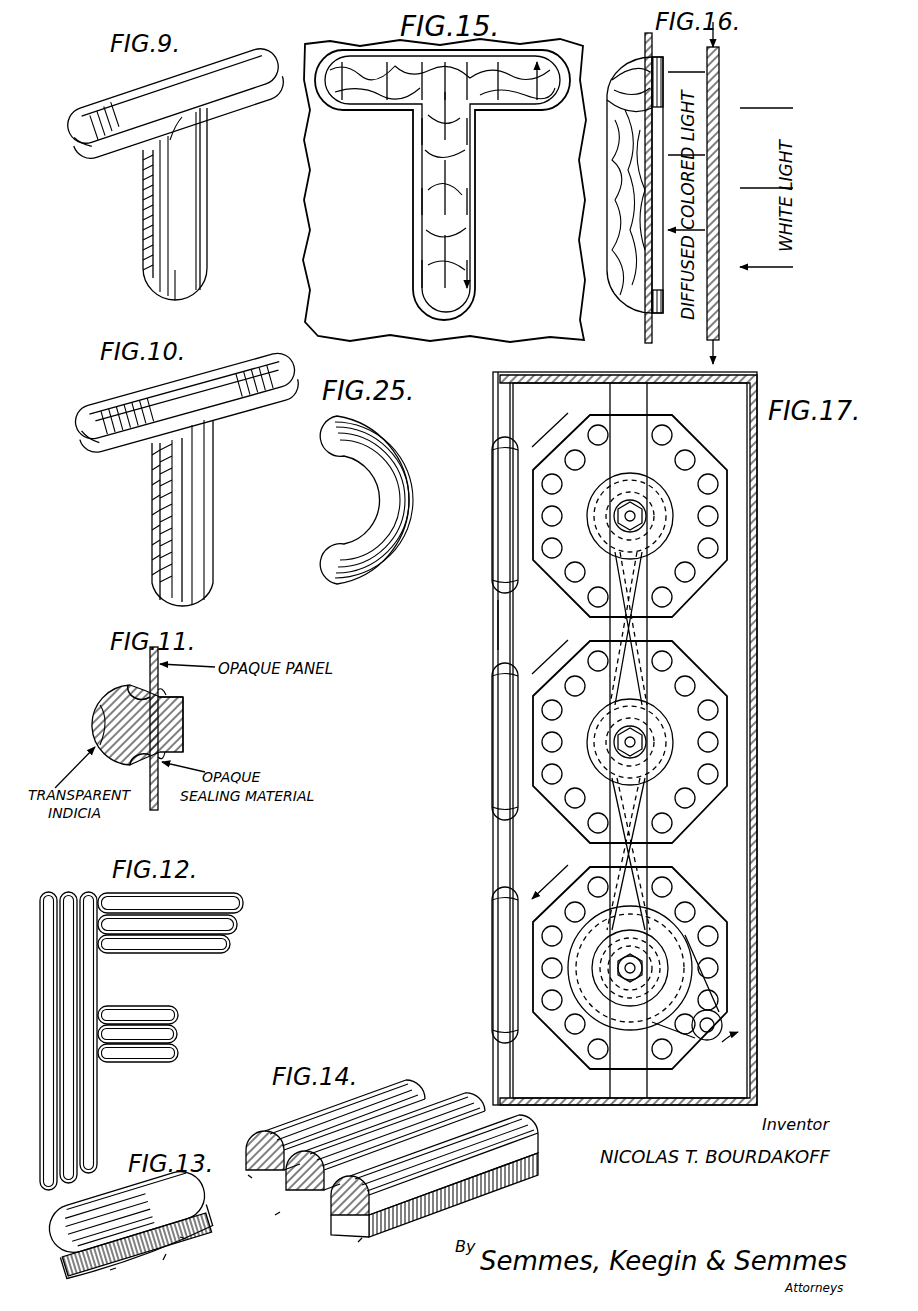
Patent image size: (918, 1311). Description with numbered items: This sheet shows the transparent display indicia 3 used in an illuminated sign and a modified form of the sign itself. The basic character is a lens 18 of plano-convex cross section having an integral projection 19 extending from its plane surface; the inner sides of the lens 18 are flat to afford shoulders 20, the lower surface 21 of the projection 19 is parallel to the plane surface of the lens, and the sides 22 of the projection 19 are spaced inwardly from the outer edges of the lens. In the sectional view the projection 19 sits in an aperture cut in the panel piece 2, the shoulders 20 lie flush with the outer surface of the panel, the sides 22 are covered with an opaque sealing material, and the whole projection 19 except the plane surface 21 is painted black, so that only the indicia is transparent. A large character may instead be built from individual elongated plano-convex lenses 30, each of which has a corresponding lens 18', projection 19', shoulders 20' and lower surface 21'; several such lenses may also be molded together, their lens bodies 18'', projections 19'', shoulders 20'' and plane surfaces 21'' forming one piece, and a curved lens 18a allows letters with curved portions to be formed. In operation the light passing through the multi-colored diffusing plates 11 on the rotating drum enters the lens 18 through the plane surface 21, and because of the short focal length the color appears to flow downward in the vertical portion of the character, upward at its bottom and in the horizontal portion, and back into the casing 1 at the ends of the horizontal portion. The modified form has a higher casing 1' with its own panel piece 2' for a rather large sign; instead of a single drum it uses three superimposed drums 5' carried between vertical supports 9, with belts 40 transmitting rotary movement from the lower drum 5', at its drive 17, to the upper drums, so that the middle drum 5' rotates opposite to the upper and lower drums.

In FIG. 9, the display indicia 3 is at (138, 211).
In FIG. 10, the display indicia 3 is at (218, 441).
In FIG. 15, the display indicia 3 is at (410, 246).
In FIG. 16, the display indicia 3 is at (612, 300).
In FIG. 11, the display indicia 3 is at (100, 692).
In FIG. 12, the display indicia 3 is at (38, 1016).
In FIG. 17, the display indicia 3 is at (492, 518).
In FIG. 9, the lens 18 is at (210, 206).
In FIG. 15, the lens 18 is at (442, 184).
In FIG. 16, the lens 18 is at (616, 181).
In FIG. 11, the lens 18 is at (72, 725).
In FIG. 9, the projection 19 is at (116, 221).
In FIG. 10, the projection 19 is at (147, 520).
In FIG. 16, the projection 19 is at (668, 208).
In FIG. 11, the projection 19 is at (217, 724).
In FIG. 10, the shoulders 20 is at (183, 450).
In FIG. 11, the shoulders 20 is at (155, 724).
In FIG. 10, the lower surface of the projection 21 is at (205, 513).
In FIG. 11, the lower surface of the projection 21 is at (198, 699).
In FIG. 10, the sides of the projection 22 is at (170, 470).
In FIG. 11, the sides of the projection 22 is at (210, 740).
In FIG. 15, the panel piece 2 is at (433, 190).
In FIG. 16, the panel piece 2 is at (636, 181).
In FIG. 11, the panel piece 2 is at (154, 728).
In FIG. 16, the multi-colored diffusing plates 11 is at (720, 310).
In FIG. 12, the elongated plano-convex lenses 30 is at (86, 893).
In FIG. 25, the curved indicia body 18a is at (388, 498).
In FIG. 13, the lens 18' is at (114, 1223).
In FIG. 13, the projection 19' is at (163, 1273).
In FIG. 13, the shoulders 20' is at (208, 1227).
In FIG. 13, the lower surface of the projection 21' is at (113, 1285).
In FIG. 14, the indicia body (second modification) 18'' is at (392, 1137).
In FIG. 14, the flange (second modification) 19'' is at (348, 1256).
In FIG. 14, the opaque coating (second modification) 20'' is at (315, 1209).
In FIG. 14, the rib (second modification) 21'' is at (278, 1232).
In FIG. 17, the vertical supports 9 is at (648, 402).
In FIG. 17, the superimposed drums 5' is at (674, 742).
In FIG. 17, the belts 40 is at (660, 570).
In FIG. 17, the panel 2' is at (473, 625).
In FIG. 17, the casing 1' is at (646, 738).
In FIG. 17, the drive pulley 17 is at (722, 975).
In FIG. 17, the casing 1 is at (695, 1000).